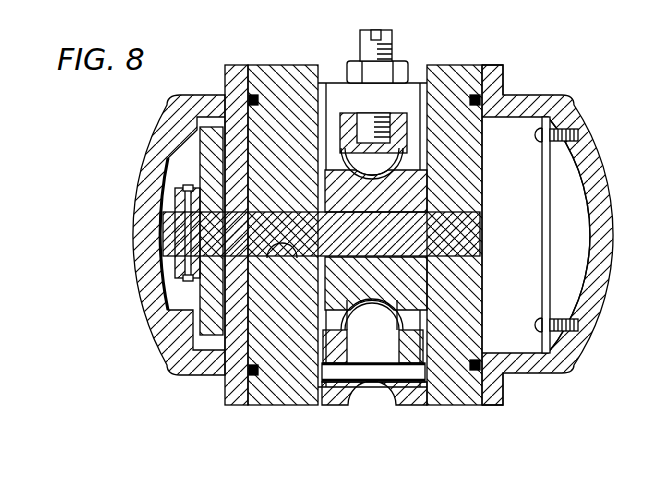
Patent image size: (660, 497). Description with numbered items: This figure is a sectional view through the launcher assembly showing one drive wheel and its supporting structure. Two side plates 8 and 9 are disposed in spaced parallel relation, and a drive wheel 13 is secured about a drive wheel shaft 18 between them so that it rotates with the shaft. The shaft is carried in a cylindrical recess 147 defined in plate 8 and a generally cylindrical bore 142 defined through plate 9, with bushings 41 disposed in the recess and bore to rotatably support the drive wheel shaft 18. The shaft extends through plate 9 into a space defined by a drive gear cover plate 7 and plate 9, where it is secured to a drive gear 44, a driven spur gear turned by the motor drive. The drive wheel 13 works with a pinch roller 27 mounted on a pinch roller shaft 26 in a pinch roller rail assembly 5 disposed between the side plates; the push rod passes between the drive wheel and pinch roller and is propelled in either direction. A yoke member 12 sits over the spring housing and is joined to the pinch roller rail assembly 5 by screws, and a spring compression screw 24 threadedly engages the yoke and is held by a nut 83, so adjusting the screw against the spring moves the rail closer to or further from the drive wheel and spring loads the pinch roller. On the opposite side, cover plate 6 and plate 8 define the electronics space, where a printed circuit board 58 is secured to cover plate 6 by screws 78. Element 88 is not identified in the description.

The pinch roller rail assembly 5 is at (330, 406).
The cover plate 6 is at (547, 94).
The drive gear cover plate 7 is at (172, 110).
The side plate 8 is at (476, 64).
The side plate 9 is at (263, 65).
The yoke member 12 is at (422, 66).
The drive wheel 13 is at (428, 319).
The drive wheel shaft 18 is at (530, 227).
The spring compression screw 24 is at (392, 38).
The pinch roller shaft 26 is at (417, 388).
The pinch roller 27 is at (372, 407).
The bushing 41 is at (420, 203).
The drive gear 44 is at (195, 292).
The printed circuit board 58 is at (552, 264).
The screw 78 is at (531, 324).
The nut 83 is at (348, 63).
The liner 88 is at (167, 160).
The cylindrical bore 142 is at (287, 268).
The cylindrical recess 147 is at (462, 232).